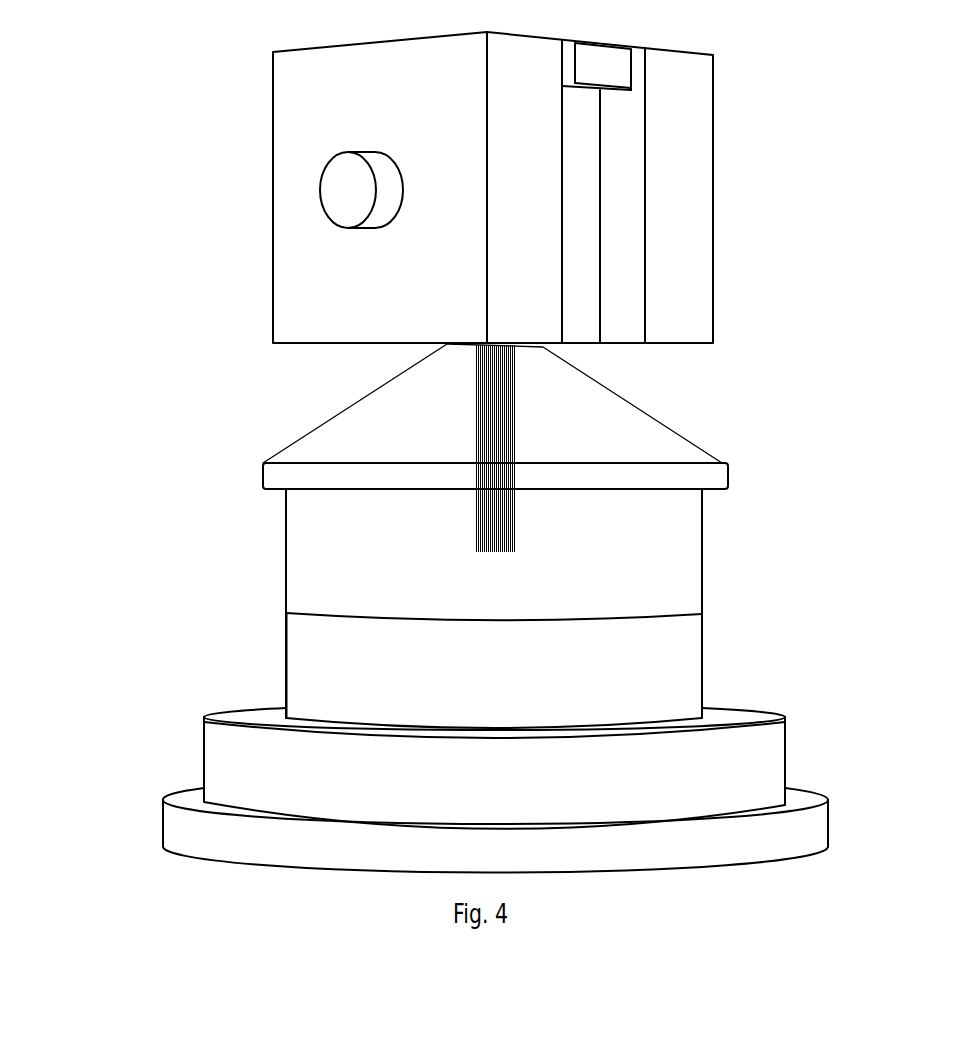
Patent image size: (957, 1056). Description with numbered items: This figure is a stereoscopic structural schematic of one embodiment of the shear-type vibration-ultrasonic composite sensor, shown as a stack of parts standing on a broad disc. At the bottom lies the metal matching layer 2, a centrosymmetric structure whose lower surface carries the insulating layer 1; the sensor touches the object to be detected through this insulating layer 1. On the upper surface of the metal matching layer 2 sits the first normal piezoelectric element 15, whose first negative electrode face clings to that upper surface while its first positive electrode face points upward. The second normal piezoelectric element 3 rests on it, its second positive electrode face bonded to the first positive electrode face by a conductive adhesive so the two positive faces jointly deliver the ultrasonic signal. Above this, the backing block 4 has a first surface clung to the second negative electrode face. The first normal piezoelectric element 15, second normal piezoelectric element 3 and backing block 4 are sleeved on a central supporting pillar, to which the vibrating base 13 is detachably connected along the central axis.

The insulating layer 1 is at (177, 823).
The metal matching layer 2 is at (753, 755).
The second normal piezoelectric element 3 is at (284, 553).
The backing block 4 is at (682, 433).
The vibrating base 13 is at (480, 394).
The first normal piezoelectric element 15 is at (284, 680).